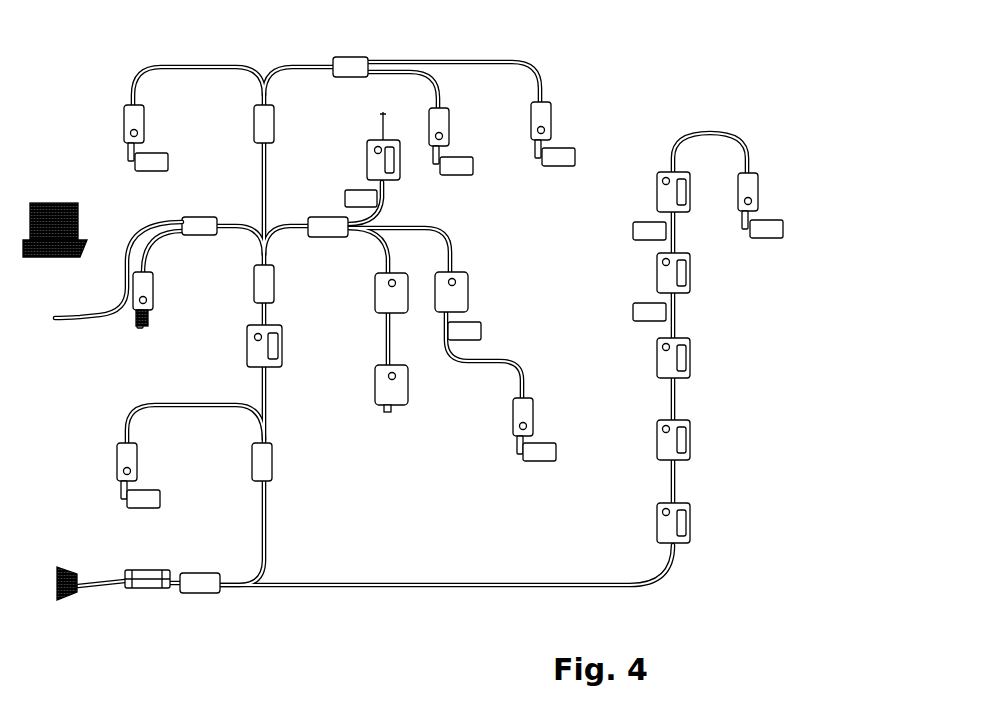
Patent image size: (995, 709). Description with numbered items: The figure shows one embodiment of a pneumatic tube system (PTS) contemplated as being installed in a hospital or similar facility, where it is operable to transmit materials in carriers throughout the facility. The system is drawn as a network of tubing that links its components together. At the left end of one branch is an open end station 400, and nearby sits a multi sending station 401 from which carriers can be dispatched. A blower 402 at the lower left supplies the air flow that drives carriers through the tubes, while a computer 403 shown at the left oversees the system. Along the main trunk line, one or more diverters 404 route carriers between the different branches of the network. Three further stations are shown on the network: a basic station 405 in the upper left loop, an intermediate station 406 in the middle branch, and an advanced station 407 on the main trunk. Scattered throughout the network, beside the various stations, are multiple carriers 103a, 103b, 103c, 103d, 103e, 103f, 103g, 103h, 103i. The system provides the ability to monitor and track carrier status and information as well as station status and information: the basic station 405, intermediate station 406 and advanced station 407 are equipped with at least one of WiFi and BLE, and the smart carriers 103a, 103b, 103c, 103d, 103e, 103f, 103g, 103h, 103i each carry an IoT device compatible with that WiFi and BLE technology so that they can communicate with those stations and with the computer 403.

The open end station 400 is at (57, 323).
The multi sending station 401 is at (160, 303).
The blower 402 is at (75, 604).
The computer 403 is at (48, 187).
The diverters 404 is at (278, 455).
The basic station 405 is at (146, 122).
The intermediate station 406 is at (412, 393).
The advanced station 407 is at (285, 346).
The carrier 103a is at (176, 159).
The carrier 103b is at (165, 497).
The carrier 103c is at (478, 165).
The carrier 103d is at (490, 325).
The carrier 103e is at (566, 462).
The carrier 103f is at (630, 307).
The carrier 103g is at (629, 230).
The carrier 103h is at (586, 153).
The carrier 103i is at (790, 229).